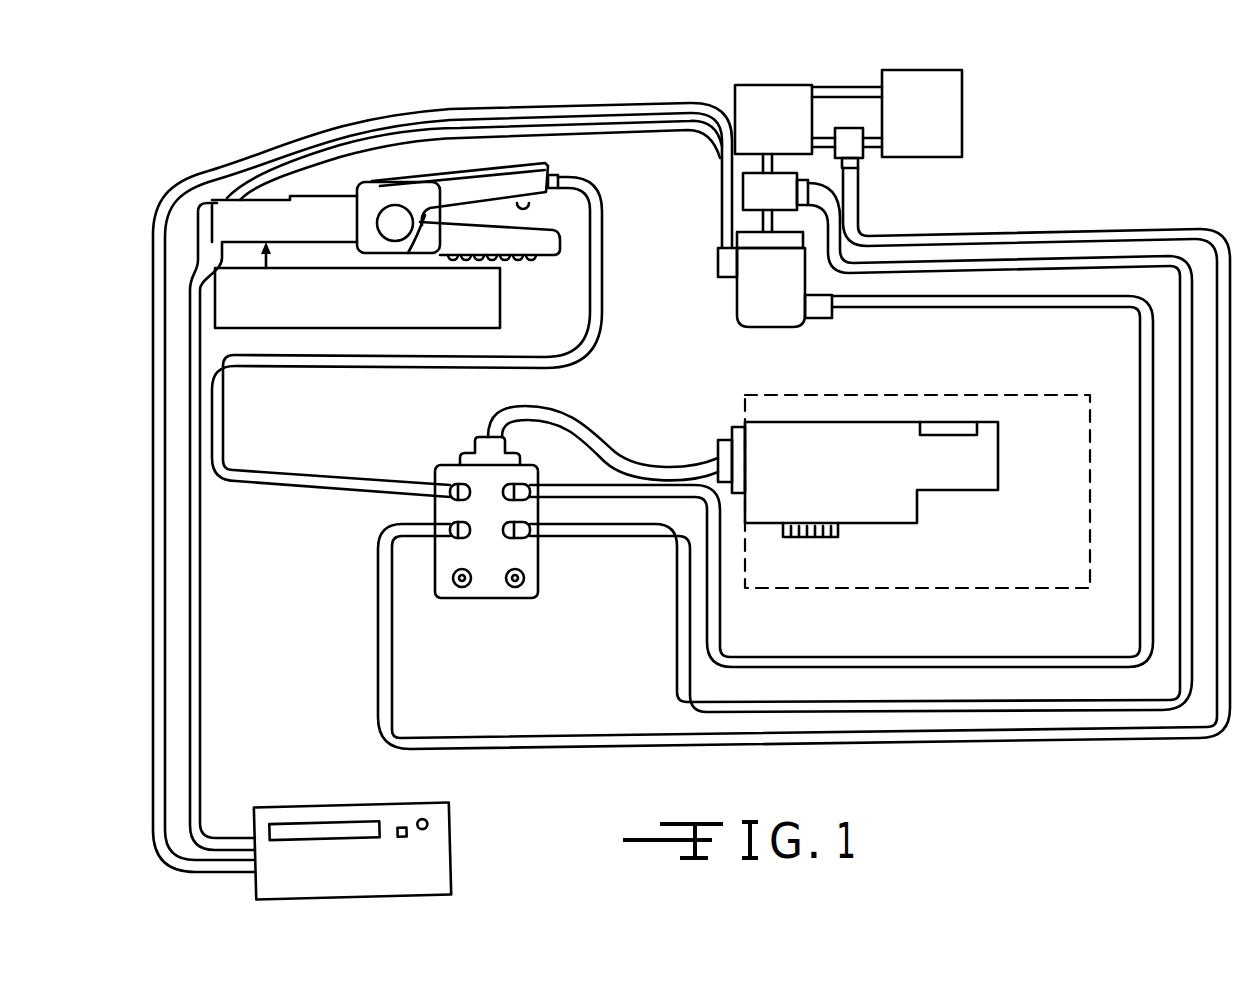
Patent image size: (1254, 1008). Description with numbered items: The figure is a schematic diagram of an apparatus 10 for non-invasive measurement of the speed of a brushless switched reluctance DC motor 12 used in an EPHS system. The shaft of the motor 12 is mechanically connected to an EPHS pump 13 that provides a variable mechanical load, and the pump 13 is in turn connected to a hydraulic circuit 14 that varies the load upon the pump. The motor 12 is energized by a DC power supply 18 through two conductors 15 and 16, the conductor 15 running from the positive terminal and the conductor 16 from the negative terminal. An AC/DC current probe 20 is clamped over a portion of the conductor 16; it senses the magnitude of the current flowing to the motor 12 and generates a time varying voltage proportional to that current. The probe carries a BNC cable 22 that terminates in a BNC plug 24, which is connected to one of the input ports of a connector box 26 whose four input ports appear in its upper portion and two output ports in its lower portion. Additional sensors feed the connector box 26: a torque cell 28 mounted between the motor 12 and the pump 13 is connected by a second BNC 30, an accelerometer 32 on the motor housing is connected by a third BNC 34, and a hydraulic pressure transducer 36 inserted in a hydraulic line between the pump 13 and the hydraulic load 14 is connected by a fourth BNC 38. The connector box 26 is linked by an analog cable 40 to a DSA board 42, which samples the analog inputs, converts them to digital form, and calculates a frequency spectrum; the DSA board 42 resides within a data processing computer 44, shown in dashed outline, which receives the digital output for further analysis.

The apparatus 10 is at (1054, 193).
The motor 12 is at (727, 278).
The EPHS pump 13 is at (778, 85).
The hydraulic circuit 14 is at (935, 80).
The conductor 15 is at (153, 523).
The conductor 16 is at (200, 530).
The DC power supply 18 is at (362, 812).
The AC/DC current probe 20 is at (535, 238).
The BNC cable 22 is at (604, 258).
The BNC plug 24 is at (468, 502).
The connector box 26 is at (480, 590).
The torque cell 28 is at (780, 184).
The second BNC 30 is at (677, 655).
The accelerometer 32 is at (820, 320).
The third BNC 34 is at (938, 310).
The hydraulic pressure transducer 36 is at (860, 150).
The fourth BNC 38 is at (930, 233).
The analog cable 40 is at (583, 427).
The DSA board 42 is at (947, 482).
The data processing computer 44 is at (1061, 452).